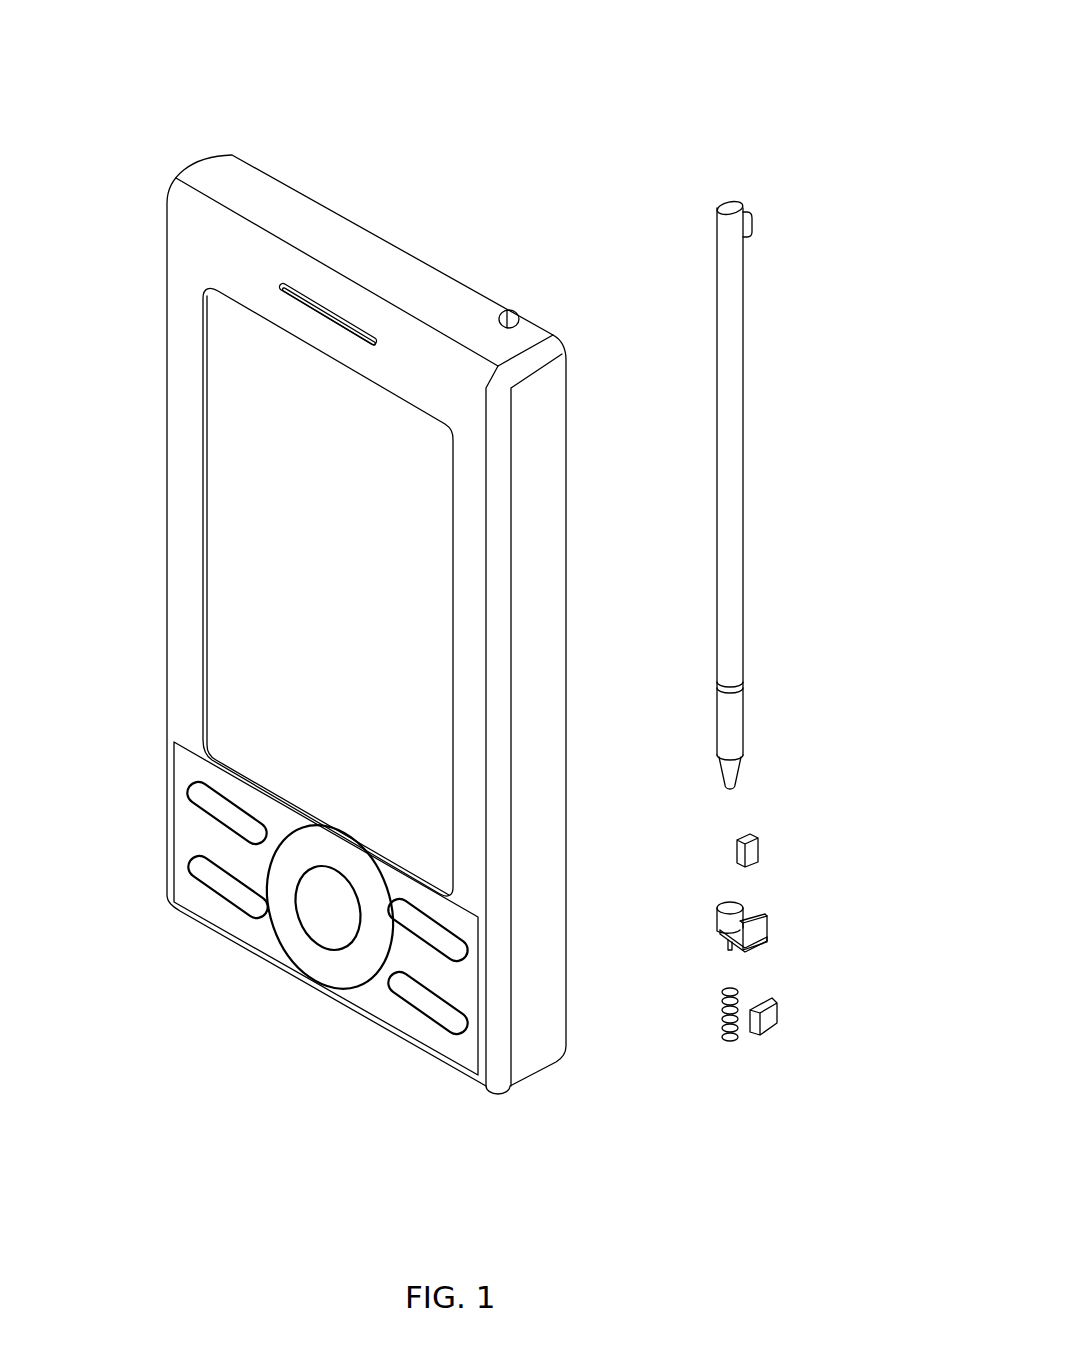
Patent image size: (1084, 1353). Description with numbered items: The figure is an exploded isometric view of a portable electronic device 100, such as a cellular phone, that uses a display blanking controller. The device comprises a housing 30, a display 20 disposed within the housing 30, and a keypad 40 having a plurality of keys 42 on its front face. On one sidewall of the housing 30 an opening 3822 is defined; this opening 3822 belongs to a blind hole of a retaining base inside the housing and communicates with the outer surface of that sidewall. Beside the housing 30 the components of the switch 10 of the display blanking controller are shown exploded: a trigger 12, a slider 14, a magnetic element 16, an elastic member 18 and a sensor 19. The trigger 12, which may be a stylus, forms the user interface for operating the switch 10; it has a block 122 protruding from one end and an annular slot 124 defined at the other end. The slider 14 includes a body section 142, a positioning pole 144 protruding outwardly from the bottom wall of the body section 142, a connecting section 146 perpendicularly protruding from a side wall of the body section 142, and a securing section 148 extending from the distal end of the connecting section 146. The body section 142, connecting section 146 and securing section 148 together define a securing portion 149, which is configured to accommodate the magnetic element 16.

The portable electronic device 100 is at (360, 63).
The housing 30 is at (200, 267).
The opening 3822 is at (500, 317).
The display 20 is at (247, 572).
The keypad 40 is at (173, 820).
The keys 42 is at (220, 885).
The switch 10 is at (890, 743).
The trigger 12 is at (772, 730).
The block 122 is at (752, 224).
The annular slot 124 is at (718, 683).
The magnetic element 16 is at (753, 850).
The slider 14 is at (790, 922).
The body section 142 is at (730, 907).
The positioning pole 144 is at (728, 942).
The connecting section 146 is at (738, 947).
The securing section 148 is at (758, 937).
The securing portion 149 is at (745, 925).
The elastic member 18 is at (728, 1033).
The sensor 19 is at (770, 1013).